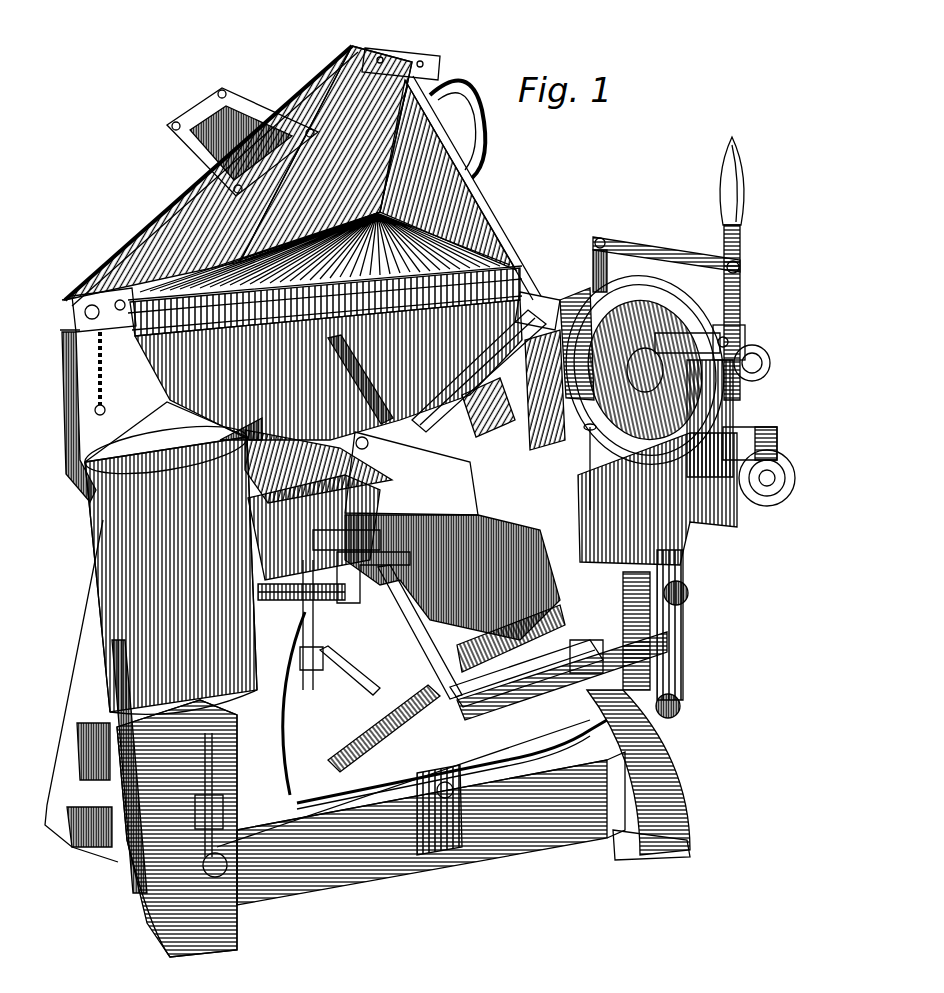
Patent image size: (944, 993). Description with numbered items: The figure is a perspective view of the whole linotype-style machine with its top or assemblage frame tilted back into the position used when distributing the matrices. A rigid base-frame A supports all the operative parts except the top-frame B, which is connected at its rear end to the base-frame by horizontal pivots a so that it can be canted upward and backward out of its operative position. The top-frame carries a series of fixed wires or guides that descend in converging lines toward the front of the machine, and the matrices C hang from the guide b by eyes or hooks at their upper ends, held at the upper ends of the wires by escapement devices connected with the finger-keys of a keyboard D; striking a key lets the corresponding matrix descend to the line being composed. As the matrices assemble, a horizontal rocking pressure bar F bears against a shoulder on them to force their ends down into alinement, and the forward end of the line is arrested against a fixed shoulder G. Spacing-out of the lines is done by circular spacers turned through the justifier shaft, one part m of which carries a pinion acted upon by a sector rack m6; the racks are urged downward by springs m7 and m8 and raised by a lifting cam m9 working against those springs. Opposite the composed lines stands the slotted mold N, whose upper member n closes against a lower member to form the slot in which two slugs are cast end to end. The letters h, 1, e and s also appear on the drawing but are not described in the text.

The base-frame A is at (360, 738).
The top-frame B is at (388, 52).
The guide b is at (290, 176).
The keyboard D is at (263, 110).
The horizontal pivots a is at (70, 316).
The matrices C is at (325, 353).
The lever h is at (345, 379).
The connecting rod 1 is at (479, 371).
The spring e is at (420, 395).
The plate s is at (318, 466).
The slotted mold N is at (314, 525).
The upper member of the mold n is at (365, 449).
The rocking pressure bar F is at (452, 541).
The fixed shoulder G is at (411, 473).
The part of the justifier shaft m is at (558, 627).
The sector rack m6 is at (511, 611).
The spring m7 is at (384, 718).
The spring m8 is at (408, 722).
The lifting cam m9 is at (342, 670).